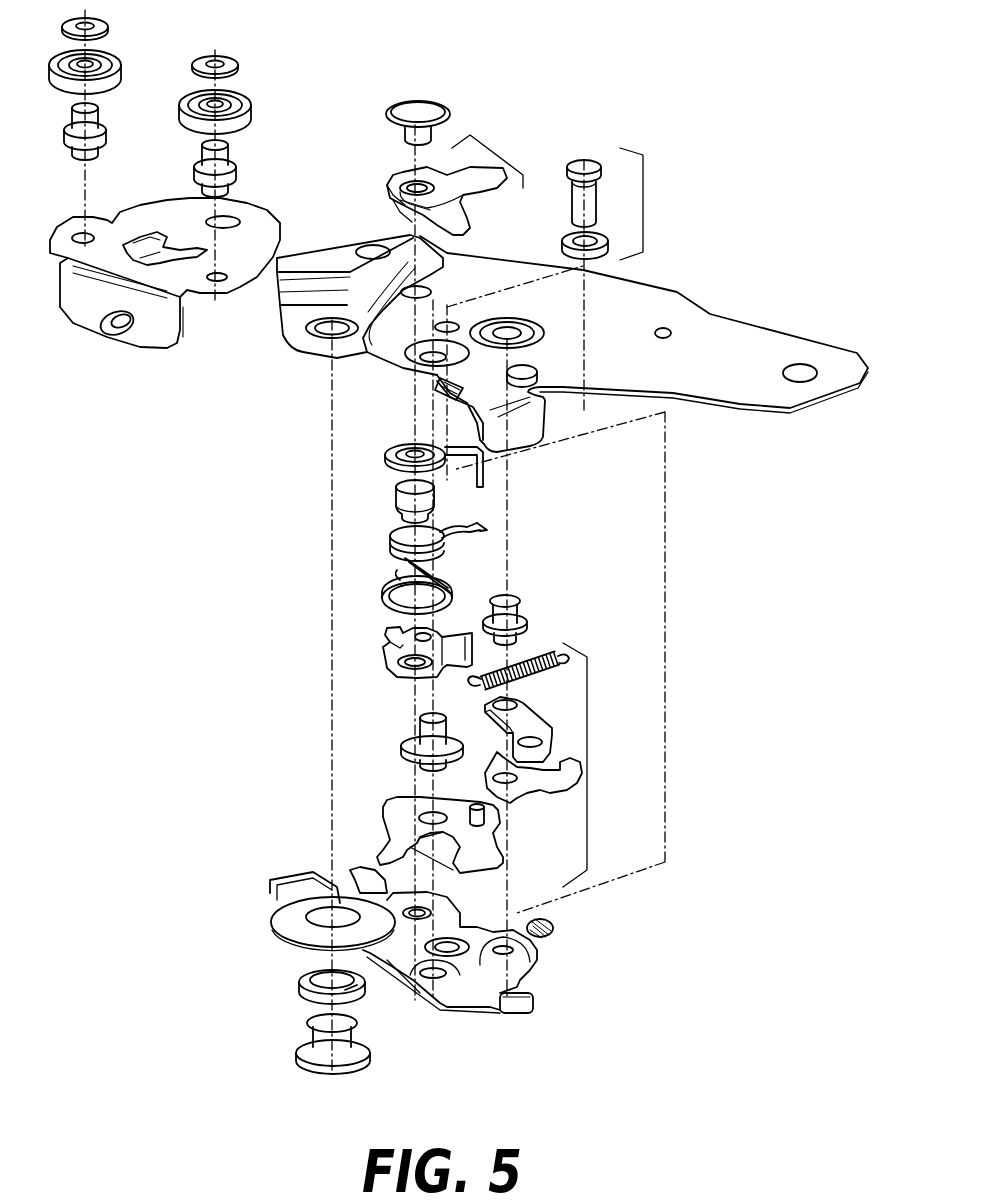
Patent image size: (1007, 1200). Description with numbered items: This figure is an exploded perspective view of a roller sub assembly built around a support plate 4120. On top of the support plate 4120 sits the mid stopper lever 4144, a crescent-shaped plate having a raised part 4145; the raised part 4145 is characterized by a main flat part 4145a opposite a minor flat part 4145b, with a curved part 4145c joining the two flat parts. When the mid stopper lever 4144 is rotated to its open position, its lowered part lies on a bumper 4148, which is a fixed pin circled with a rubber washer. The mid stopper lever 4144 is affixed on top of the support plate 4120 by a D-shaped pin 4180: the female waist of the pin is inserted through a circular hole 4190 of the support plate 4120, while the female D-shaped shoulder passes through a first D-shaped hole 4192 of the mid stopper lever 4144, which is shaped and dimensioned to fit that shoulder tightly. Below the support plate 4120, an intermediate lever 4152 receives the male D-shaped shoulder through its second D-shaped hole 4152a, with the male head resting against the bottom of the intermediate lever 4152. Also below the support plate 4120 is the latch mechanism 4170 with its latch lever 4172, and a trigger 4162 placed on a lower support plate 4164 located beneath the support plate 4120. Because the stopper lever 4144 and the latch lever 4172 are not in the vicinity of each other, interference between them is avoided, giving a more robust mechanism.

The support plate 4120 is at (767, 397).
The mid stopper lever 4144 is at (497, 148).
The raised part 4145 is at (390, 177).
The main flat part 4145a is at (450, 212).
The minor flat part 4145b is at (400, 210).
The curved part 4145c is at (417, 210).
The bumper 4148 is at (643, 205).
The intermediate lever 4152 is at (388, 452).
The second D-shaped hole 4152a is at (397, 487).
The trigger 4162 is at (388, 660).
The lower support plate 4164 is at (270, 913).
The latch mechanism 4170 is at (587, 770).
The latch lever 4172 is at (388, 800).
The D-shaped pin 4180 is at (418, 86).
The circular hole 4190 is at (403, 297).
The first D-shaped hole 4192 is at (417, 177).